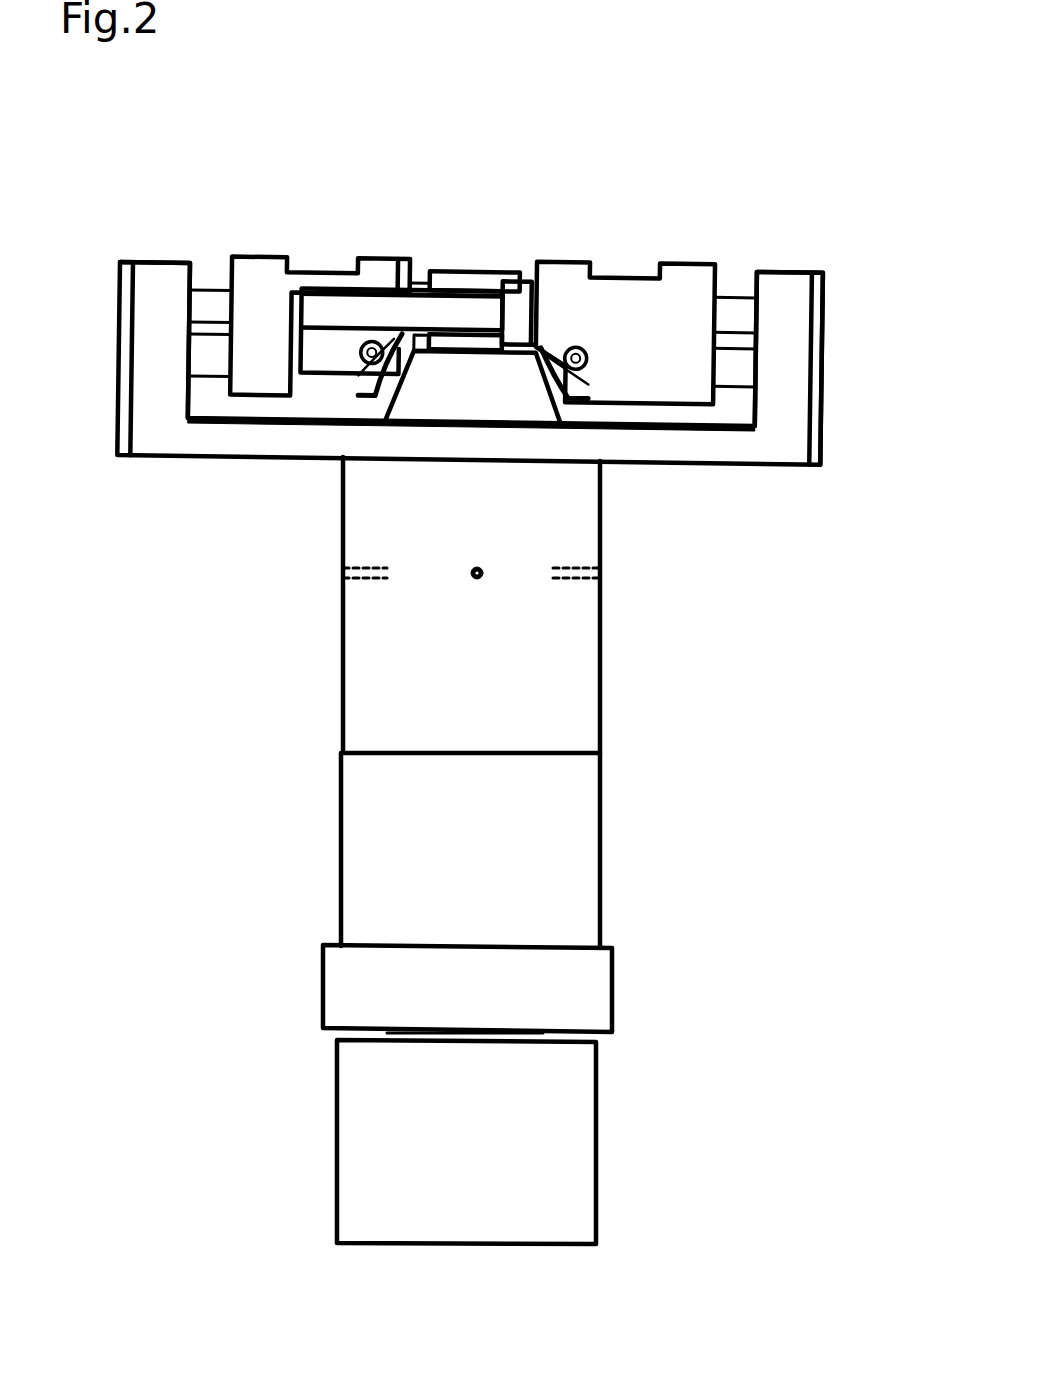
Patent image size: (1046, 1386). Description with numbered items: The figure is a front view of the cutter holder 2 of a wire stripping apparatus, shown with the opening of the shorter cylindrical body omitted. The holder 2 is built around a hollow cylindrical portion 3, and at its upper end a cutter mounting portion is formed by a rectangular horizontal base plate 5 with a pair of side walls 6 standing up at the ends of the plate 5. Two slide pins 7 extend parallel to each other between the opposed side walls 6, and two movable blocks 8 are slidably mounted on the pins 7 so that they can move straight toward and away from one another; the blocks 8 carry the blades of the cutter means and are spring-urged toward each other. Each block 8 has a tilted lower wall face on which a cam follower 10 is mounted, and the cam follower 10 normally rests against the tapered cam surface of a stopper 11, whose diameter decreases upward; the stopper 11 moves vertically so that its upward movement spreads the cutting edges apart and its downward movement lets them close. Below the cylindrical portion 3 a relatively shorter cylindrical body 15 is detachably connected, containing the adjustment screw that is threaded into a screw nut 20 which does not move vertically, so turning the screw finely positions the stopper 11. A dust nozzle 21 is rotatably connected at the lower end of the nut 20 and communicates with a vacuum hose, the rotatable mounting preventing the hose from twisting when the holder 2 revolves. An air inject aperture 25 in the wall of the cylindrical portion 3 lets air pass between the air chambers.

The cutter holder 2 is at (826, 245).
The cylindrical portion 3 is at (573, 650).
The horizontal base plate 5 is at (700, 452).
The side wall 6 is at (153, 320).
The slide pin 7 is at (444, 310).
The movable block 8 is at (255, 280).
The cam follower 10 is at (365, 378).
The stopper 11 is at (445, 388).
The cylindrical body 15 is at (573, 846).
The screw nut 20 is at (585, 995).
The dust nozzle 21 is at (567, 1117).
The air inject aperture 25 is at (471, 581).